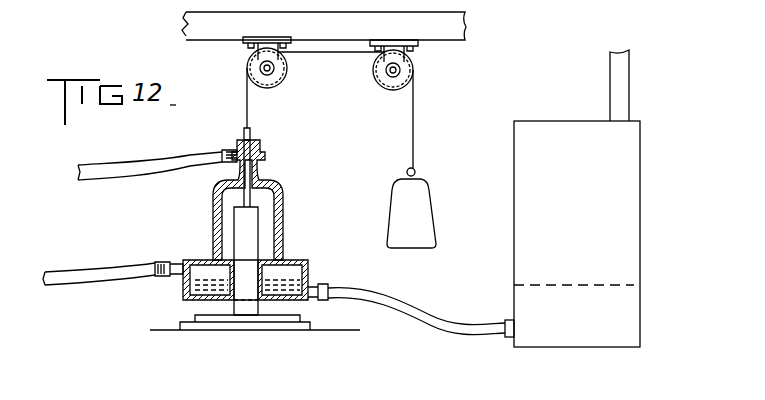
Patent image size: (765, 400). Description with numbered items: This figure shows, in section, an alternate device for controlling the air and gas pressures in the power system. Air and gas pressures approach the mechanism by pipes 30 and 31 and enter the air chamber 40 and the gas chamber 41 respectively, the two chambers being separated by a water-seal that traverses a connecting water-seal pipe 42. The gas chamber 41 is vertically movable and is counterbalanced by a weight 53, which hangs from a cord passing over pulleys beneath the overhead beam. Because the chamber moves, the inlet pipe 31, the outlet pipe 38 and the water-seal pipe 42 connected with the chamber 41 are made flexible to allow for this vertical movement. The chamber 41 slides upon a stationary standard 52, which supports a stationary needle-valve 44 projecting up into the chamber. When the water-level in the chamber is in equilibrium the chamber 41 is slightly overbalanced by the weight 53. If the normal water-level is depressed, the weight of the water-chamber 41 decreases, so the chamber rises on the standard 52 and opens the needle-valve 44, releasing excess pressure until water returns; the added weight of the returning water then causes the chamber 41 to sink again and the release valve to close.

The air pipe 30 is at (632, 85).
The gas inlet pipe 31 is at (97, 270).
The outlet pipe 38 is at (148, 165).
The air chamber 40 is at (624, 210).
The gas chamber 41 is at (288, 272).
The water-seal pipe 42 is at (408, 310).
The needle-valve 44 is at (277, 186).
The standard 52 is at (243, 312).
The weight 53 is at (398, 202).